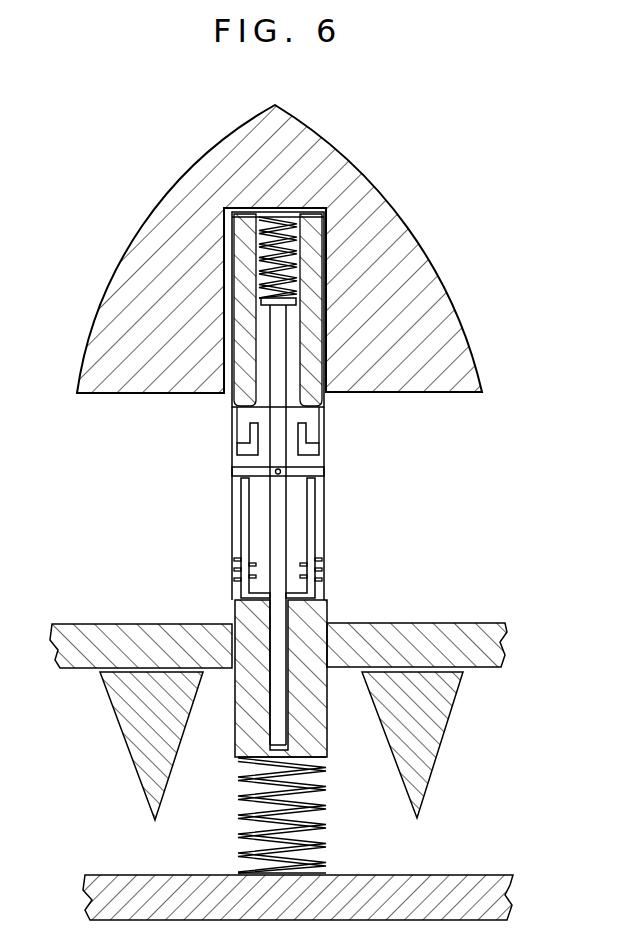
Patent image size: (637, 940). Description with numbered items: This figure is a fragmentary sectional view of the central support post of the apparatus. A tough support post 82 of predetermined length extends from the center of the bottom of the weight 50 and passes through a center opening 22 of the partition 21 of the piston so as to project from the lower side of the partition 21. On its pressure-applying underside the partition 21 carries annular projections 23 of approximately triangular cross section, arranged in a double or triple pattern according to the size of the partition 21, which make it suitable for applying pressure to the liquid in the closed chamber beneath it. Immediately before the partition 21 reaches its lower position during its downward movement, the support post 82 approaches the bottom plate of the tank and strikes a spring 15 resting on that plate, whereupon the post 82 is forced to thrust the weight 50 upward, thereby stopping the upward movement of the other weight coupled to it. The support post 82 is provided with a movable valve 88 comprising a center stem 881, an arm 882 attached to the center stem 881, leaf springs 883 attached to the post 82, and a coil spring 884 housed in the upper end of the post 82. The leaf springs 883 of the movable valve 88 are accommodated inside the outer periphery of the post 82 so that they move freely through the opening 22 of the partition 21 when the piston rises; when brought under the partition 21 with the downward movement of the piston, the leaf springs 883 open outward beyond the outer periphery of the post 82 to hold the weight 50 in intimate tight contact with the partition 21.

The weight 50 is at (402, 257).
The coil spring 884 is at (326, 208).
The movable valve 88 is at (323, 520).
The arm 882 is at (315, 472).
The leaf springs 883 is at (248, 512).
The center stem 881 is at (273, 328).
The support post 82 is at (312, 605).
The center opening 22 is at (343, 642).
The partition 21 is at (472, 655).
The annular projections 23 is at (423, 757).
The spring 15 is at (323, 827).